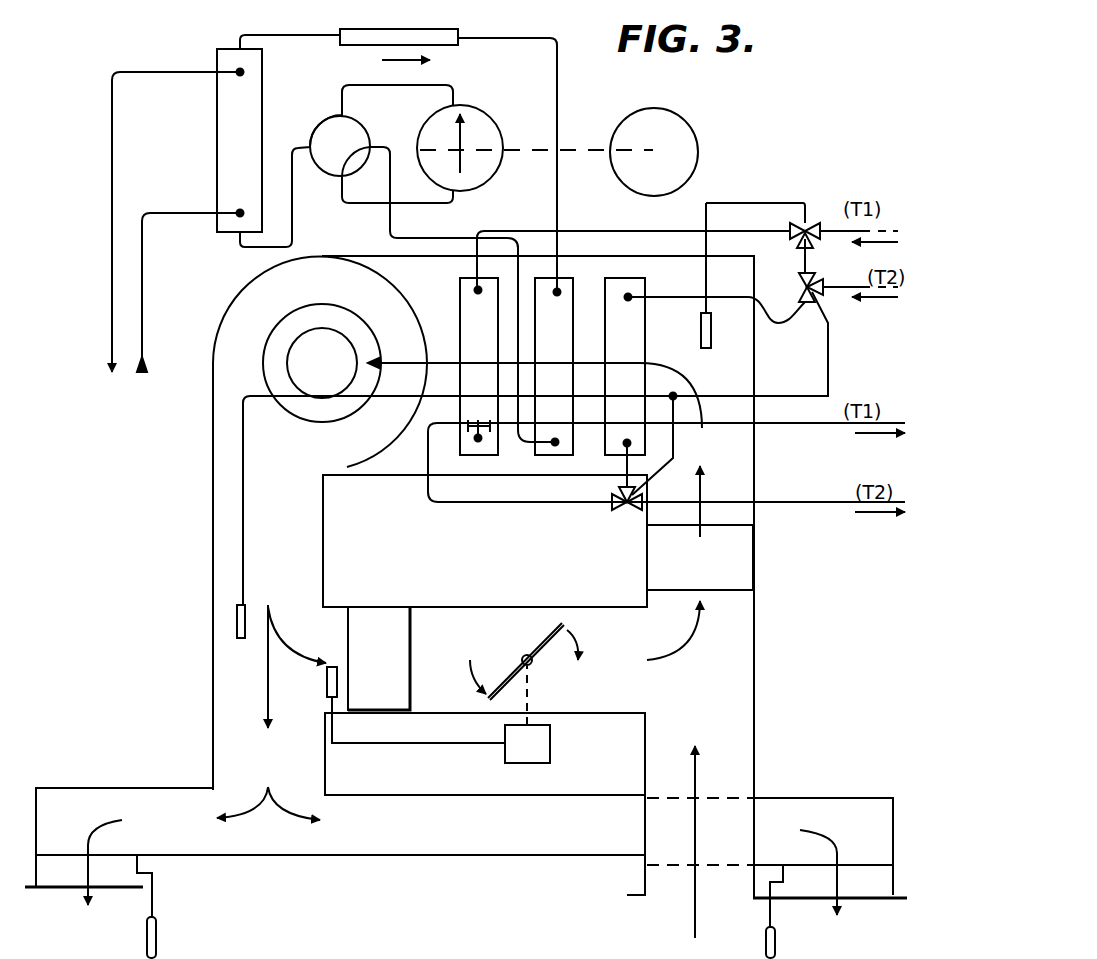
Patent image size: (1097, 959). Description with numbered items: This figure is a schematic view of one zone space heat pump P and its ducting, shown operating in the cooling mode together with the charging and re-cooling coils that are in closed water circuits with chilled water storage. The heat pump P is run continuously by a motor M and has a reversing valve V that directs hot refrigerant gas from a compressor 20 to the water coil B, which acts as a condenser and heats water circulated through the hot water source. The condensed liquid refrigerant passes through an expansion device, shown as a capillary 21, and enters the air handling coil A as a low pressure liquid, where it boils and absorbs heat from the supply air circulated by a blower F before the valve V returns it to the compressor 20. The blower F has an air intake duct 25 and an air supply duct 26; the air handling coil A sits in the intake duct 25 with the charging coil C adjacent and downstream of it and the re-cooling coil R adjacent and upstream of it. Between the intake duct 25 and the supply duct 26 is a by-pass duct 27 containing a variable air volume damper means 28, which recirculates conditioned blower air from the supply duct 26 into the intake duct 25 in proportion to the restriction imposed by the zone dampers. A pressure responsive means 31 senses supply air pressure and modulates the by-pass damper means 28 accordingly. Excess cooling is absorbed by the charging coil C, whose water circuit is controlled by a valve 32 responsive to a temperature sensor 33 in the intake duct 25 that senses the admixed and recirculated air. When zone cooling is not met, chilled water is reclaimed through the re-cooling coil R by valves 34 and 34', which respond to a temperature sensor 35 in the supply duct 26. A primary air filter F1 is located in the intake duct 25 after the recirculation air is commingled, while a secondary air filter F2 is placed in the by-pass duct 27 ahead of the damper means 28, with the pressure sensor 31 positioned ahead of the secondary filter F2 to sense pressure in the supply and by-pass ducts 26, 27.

The compressor 20 is at (481, 127).
The capillary 21 is at (427, 30).
The air intake duct 25 is at (735, 600).
The air supply duct 26 is at (225, 514).
The by-pass duct 27 is at (483, 618).
The variable air volume damper means 28 is at (540, 663).
The pressure responsive means 31 is at (328, 678).
The valve 32 is at (808, 226).
The temperature sensor 33 is at (711, 335).
The valve 34 is at (830, 274).
The valve 34' is at (616, 523).
The temperature sensor 35 is at (236, 622).
The water coil B is at (222, 117).
The reversing valve V is at (330, 130).
The motor M is at (673, 143).
The heat pump P is at (582, 100).
The blower F is at (256, 286).
The charging coil C is at (458, 306).
The air handling coil A is at (563, 275).
The re-cooling coil R is at (623, 277).
The primary air filter F1 is at (700, 563).
The secondary air filter F2 is at (339, 666).